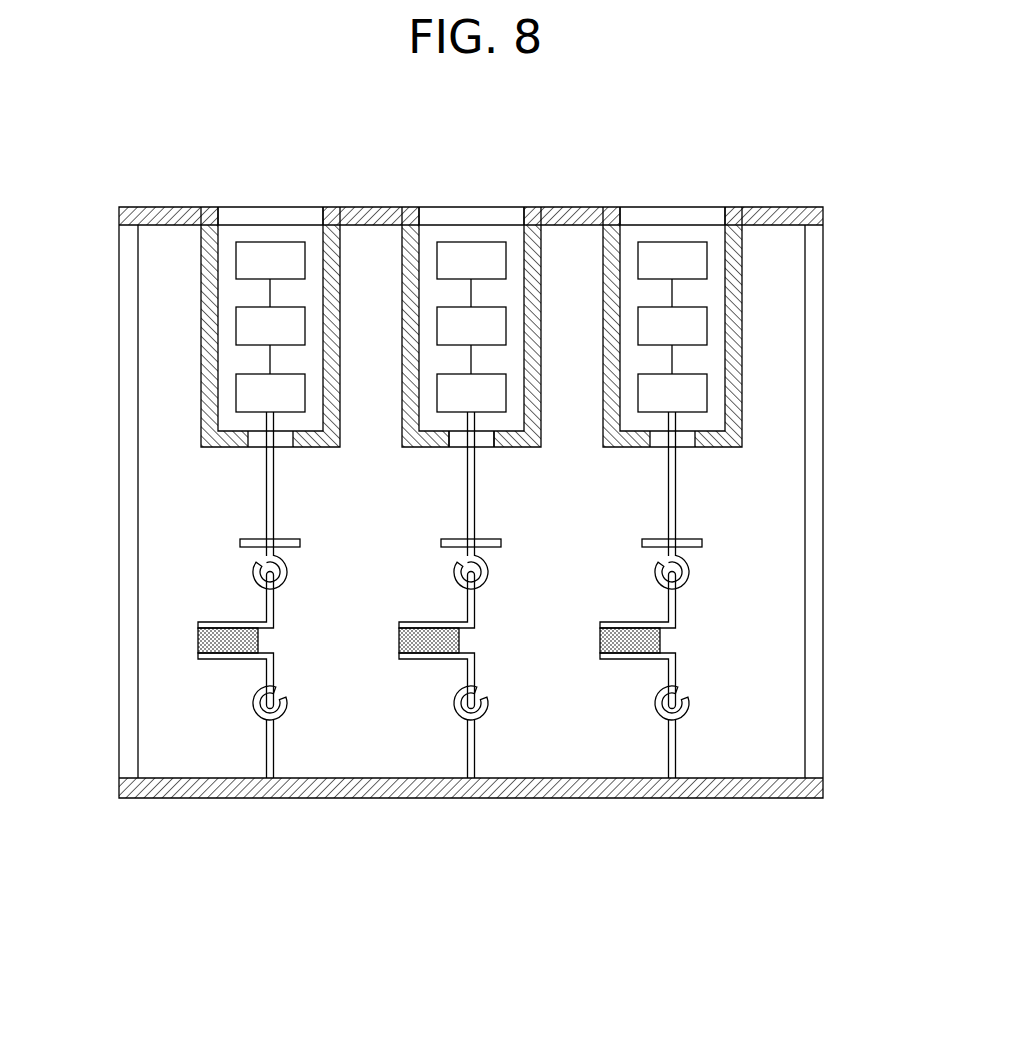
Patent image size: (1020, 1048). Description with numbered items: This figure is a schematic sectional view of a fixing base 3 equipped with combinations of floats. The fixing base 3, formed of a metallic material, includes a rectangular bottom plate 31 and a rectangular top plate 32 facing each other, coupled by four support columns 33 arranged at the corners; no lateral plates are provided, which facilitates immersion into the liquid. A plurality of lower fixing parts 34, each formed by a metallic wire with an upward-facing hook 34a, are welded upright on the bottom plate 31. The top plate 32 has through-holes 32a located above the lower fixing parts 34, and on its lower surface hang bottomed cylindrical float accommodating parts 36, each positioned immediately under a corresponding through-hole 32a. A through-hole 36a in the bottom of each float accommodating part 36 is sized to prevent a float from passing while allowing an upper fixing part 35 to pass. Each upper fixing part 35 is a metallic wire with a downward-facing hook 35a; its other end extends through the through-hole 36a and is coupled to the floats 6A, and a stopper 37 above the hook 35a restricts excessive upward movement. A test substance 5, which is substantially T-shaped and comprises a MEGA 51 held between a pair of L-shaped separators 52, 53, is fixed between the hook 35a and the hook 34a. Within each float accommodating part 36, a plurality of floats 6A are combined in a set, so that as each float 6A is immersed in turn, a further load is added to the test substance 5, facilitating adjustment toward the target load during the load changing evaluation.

The fixing base 3 is at (825, 343).
The bottom plate 31 is at (393, 790).
The top plate 32 is at (358, 209).
The through-hole 32a is at (420, 219).
The support column 33 is at (128, 485).
The lower fixing part 34 is at (472, 748).
The hook 34a is at (455, 705).
The upper fixing part 35 is at (471, 513).
The hook 35a is at (488, 572).
The float accommodating part 36 is at (537, 280).
The through-hole 36a is at (483, 443).
The stopper 37 is at (440, 545).
The test substance 5 is at (163, 640).
The MEGA 51 is at (197, 644).
The L-shaped separator 52 is at (227, 660).
The L-shaped separator 53 is at (227, 622).
The float 6A is at (450, 265).